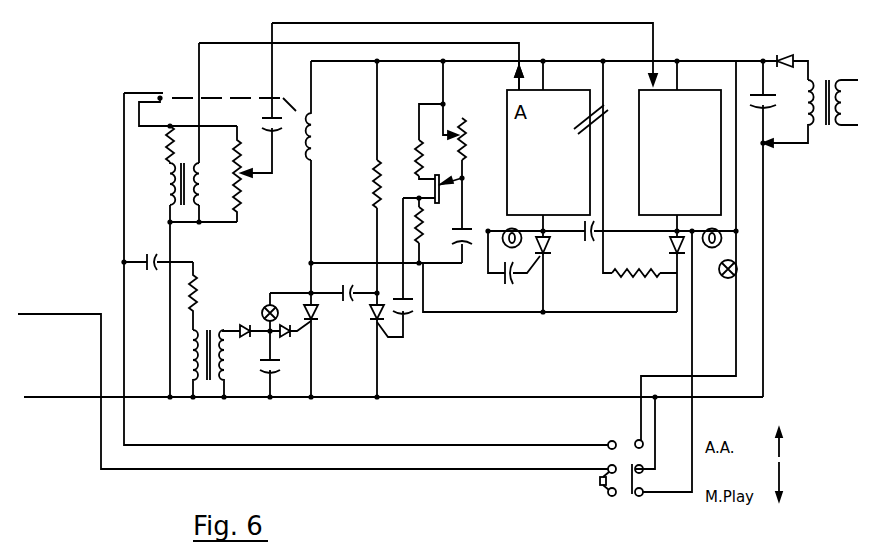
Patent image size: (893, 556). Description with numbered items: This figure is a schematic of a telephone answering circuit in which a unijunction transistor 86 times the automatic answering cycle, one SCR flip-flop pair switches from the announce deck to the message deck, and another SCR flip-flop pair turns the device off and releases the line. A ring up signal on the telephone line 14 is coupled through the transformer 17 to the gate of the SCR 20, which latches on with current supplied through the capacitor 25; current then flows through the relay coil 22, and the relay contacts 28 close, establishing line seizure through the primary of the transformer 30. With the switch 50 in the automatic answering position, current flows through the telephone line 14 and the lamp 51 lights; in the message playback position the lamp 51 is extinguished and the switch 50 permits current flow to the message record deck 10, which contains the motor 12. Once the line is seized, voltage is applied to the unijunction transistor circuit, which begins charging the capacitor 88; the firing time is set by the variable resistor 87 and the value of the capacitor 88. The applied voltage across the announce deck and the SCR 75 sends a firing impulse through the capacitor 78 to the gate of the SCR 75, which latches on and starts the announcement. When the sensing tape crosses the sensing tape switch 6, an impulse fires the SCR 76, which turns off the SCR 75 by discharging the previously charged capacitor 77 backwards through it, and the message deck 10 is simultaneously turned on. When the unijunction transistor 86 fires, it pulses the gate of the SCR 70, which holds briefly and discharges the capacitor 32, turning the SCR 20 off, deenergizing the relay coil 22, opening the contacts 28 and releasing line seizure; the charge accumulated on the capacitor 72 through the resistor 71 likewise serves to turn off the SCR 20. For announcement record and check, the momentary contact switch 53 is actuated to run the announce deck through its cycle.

The sensing tape switch 6 is at (572, 114).
The message record deck 10 is at (698, 69).
The motor 12 is at (581, 82).
The telephone line 14 is at (56, 385).
The transformer 17 is at (211, 325).
The SCR 20 is at (314, 323).
The relay coil 22 is at (313, 147).
The capacitor 25 is at (796, 87).
The relay contacts 28 is at (167, 76).
The transformer 30 is at (170, 172).
The capacitor 32 is at (242, 205).
The switch 50 is at (617, 499).
The lamp 51 is at (739, 269).
The momentary contact switch 53 is at (268, 302).
The SCR 70 is at (371, 335).
The resistor 71 is at (366, 196).
The capacitor 72 is at (362, 282).
The SCR 75 is at (550, 252).
The SCR 76 is at (634, 285).
The capacitor 77 is at (569, 240).
The capacitor 78 is at (526, 282).
The unijunction transistor 86 is at (414, 185).
The variable resistor 87 is at (466, 133).
The capacitor 88 is at (444, 281).